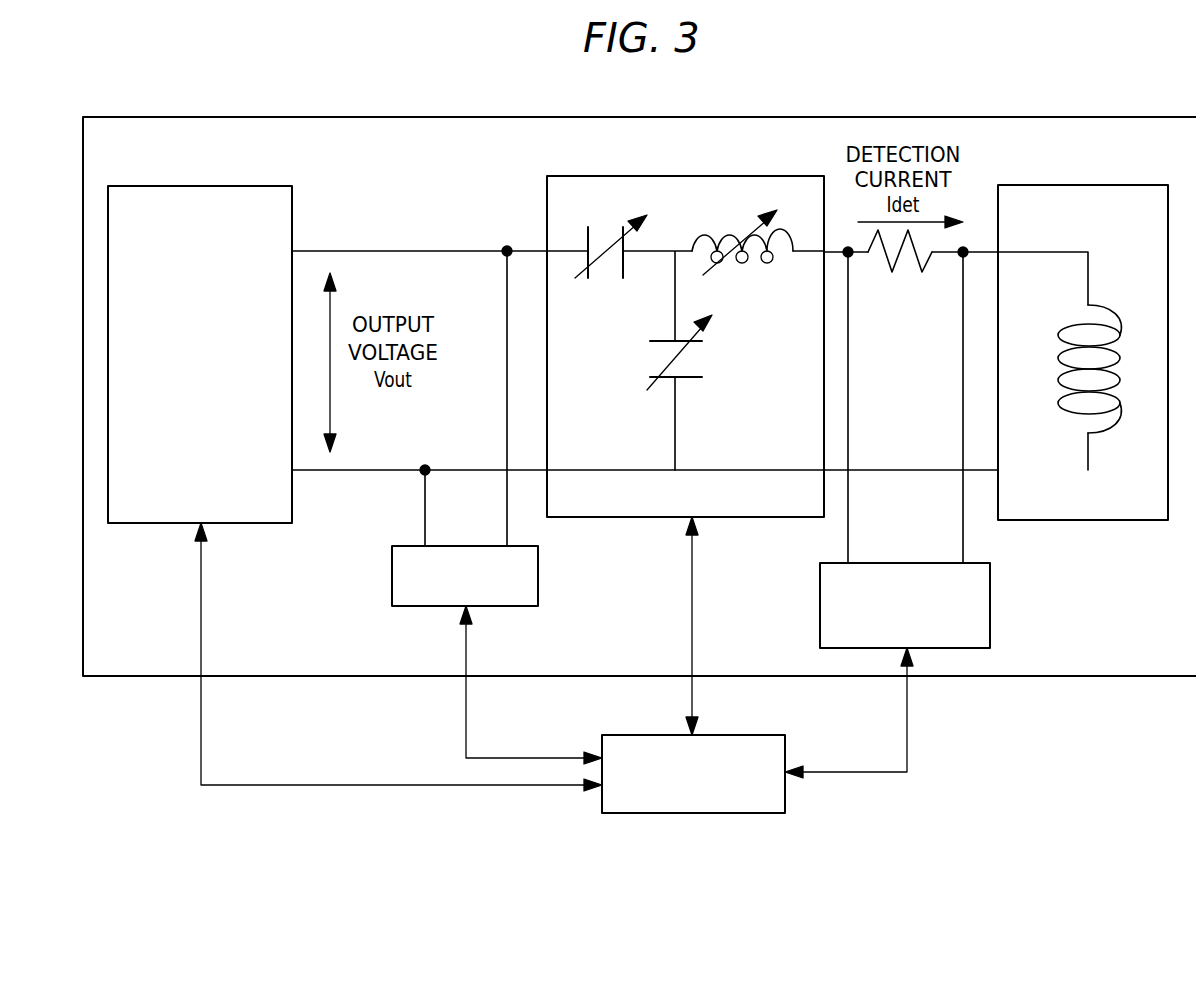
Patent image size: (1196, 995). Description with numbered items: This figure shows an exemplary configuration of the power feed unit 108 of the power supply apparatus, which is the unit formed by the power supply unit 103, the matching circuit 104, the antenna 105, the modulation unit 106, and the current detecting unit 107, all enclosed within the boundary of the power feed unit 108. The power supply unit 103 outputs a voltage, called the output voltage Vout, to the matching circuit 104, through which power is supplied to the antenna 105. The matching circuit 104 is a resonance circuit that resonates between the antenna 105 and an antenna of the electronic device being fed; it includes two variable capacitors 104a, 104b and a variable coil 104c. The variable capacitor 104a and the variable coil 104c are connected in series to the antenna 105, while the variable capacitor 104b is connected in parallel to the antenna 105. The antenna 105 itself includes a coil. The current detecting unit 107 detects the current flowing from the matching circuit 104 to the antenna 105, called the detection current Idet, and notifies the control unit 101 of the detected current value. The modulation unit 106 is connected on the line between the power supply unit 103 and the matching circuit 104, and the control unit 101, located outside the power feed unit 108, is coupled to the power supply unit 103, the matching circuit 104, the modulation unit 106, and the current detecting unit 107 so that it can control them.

The control unit 101 is at (750, 718).
The power supply unit 103 is at (258, 168).
The matching circuit 104 is at (663, 176).
The variable capacitor 104a is at (608, 285).
The variable capacitor 104b is at (643, 362).
The variable coil 104c is at (757, 277).
The antenna 105 is at (1097, 168).
The modulation unit 106 is at (467, 528).
The current detecting unit 107 is at (910, 543).
The power feed unit 108 is at (462, 116).